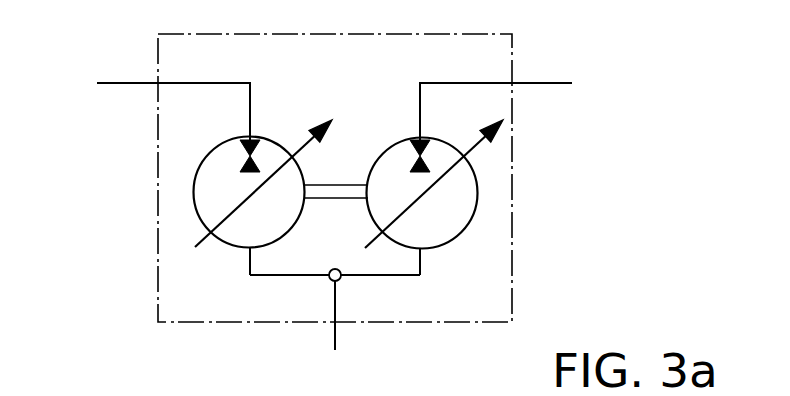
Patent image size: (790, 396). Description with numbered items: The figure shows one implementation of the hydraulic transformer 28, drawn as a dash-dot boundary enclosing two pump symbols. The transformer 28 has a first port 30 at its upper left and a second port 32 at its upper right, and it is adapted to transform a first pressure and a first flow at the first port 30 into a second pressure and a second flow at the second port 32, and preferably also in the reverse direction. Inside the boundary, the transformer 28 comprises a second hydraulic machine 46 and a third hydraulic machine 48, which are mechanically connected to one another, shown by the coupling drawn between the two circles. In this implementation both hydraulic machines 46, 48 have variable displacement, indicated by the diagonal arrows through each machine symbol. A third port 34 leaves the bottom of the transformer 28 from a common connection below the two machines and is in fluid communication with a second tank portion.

The hydraulic transformer 28 is at (512, 278).
The first port 30 is at (122, 82).
The second port 32 is at (542, 84).
The third port 34 is at (332, 337).
The second hydraulic machine 46 is at (192, 193).
The third hydraulic machine 48 is at (478, 192).